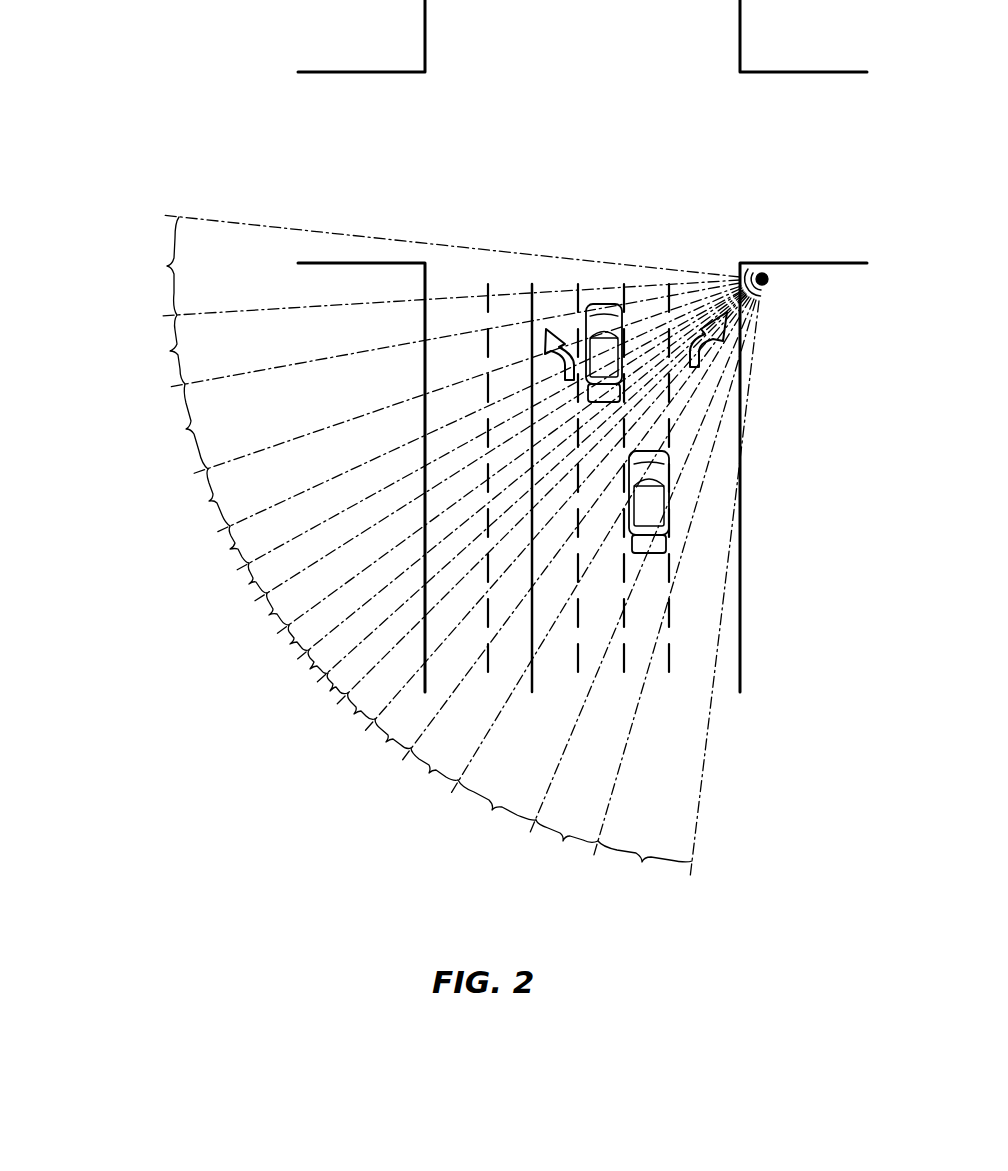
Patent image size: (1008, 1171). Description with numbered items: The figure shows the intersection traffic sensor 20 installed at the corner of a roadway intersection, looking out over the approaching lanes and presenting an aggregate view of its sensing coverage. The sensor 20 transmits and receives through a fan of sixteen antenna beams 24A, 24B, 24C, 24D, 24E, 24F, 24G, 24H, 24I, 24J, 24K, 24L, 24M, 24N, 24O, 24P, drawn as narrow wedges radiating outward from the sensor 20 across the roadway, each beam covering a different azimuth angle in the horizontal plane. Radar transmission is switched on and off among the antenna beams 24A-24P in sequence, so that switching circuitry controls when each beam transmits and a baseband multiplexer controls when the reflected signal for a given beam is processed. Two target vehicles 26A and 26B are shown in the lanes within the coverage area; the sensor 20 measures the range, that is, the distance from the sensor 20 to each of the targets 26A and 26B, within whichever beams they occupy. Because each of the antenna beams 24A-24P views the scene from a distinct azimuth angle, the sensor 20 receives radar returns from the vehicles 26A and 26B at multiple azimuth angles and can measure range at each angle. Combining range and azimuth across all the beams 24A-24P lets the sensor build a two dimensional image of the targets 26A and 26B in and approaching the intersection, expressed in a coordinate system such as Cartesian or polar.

The intersection traffic sensor 20 is at (770, 281).
The target vehicle 26A is at (601, 312).
The target vehicle 26B is at (650, 507).
The antenna beam 24A is at (642, 862).
The antenna beam 24B is at (563, 841).
The antenna beam 24C is at (492, 810).
The antenna beam 24D is at (429, 773).
The antenna beam 24E is at (386, 742).
The antenna beam 24F is at (354, 714).
The antenna beam 24G is at (330, 691).
The antenna beam 24H is at (310, 669).
The antenna beam 24I is at (290, 644).
The antenna beam 24J is at (269, 615).
The antenna beam 24K is at (249, 584).
The antenna beam 24L is at (230, 549).
The antenna beam 24M is at (209, 501).
The antenna beam 24N is at (186, 429).
The antenna beam 24O is at (170, 351).
The antenna beam 24P is at (167, 266).